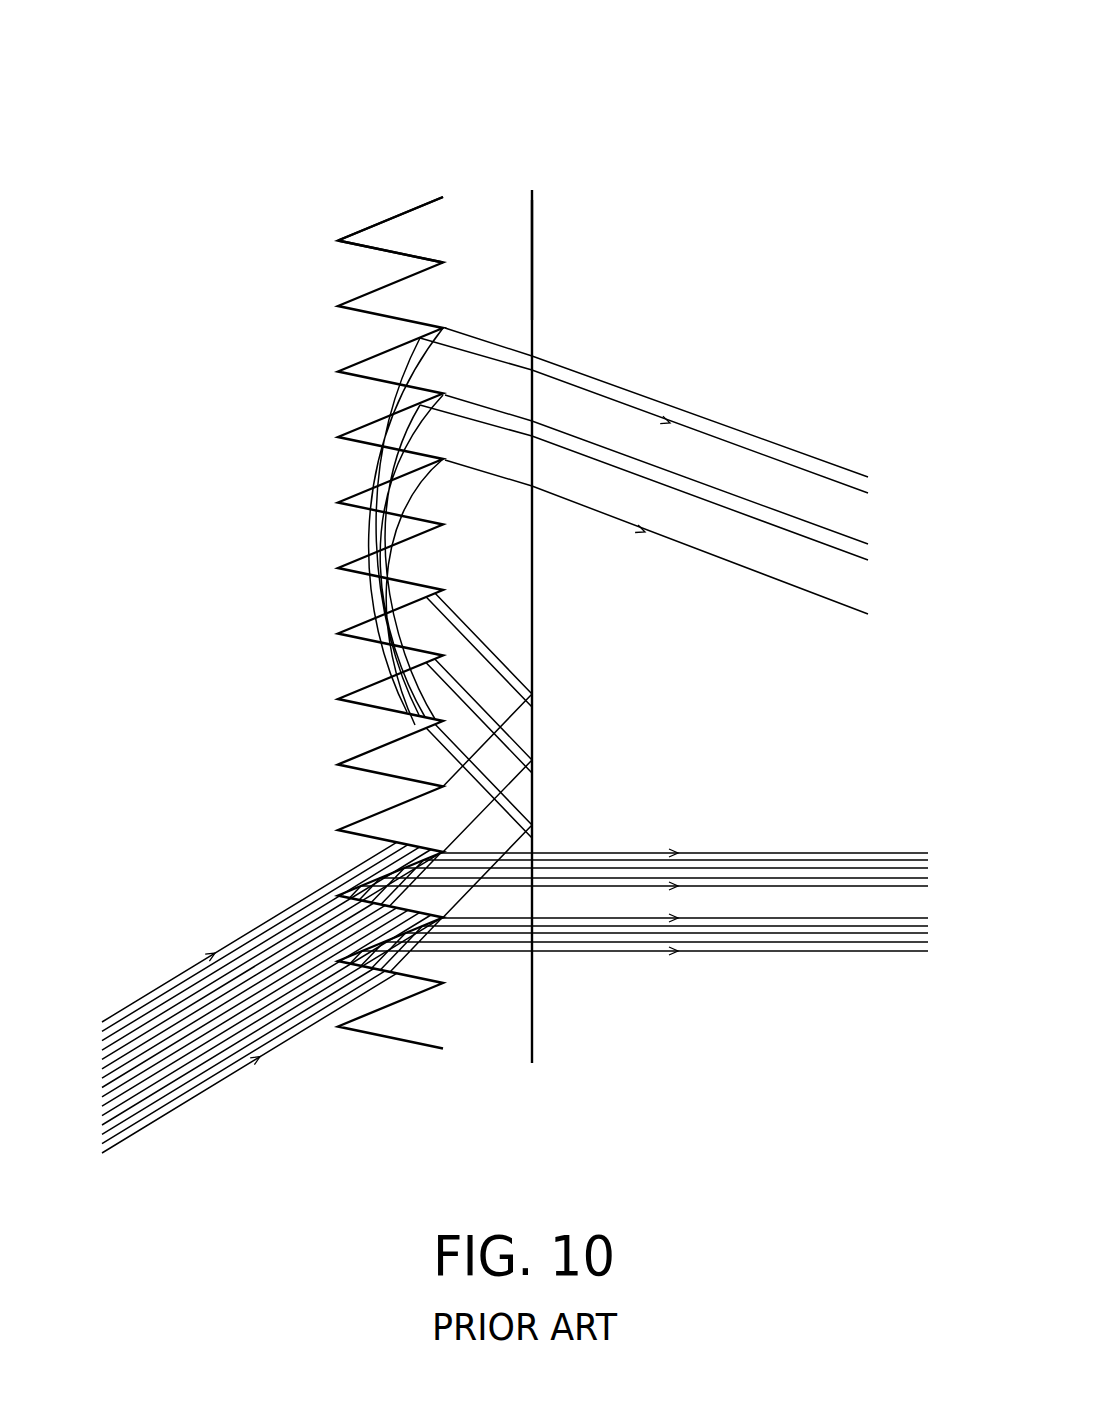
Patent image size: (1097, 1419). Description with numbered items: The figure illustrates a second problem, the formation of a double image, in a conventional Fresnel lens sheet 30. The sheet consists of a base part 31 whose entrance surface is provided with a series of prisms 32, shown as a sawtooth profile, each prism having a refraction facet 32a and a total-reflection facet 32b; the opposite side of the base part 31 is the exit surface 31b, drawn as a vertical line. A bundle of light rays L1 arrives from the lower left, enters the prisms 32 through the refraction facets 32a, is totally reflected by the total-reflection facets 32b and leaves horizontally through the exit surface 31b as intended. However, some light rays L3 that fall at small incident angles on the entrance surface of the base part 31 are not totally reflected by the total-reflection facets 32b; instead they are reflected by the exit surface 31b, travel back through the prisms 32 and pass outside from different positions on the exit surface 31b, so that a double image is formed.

The Fresnel lens sheet 30 is at (523, 116).
The base part 31 is at (483, 193).
The exit surface 31b is at (533, 238).
The prisms 32 is at (386, 195).
The refraction facet 32a is at (362, 247).
The total-reflection facet 32b is at (382, 222).
The light rays L1 is at (757, 952).
The light rays L3 is at (810, 458).